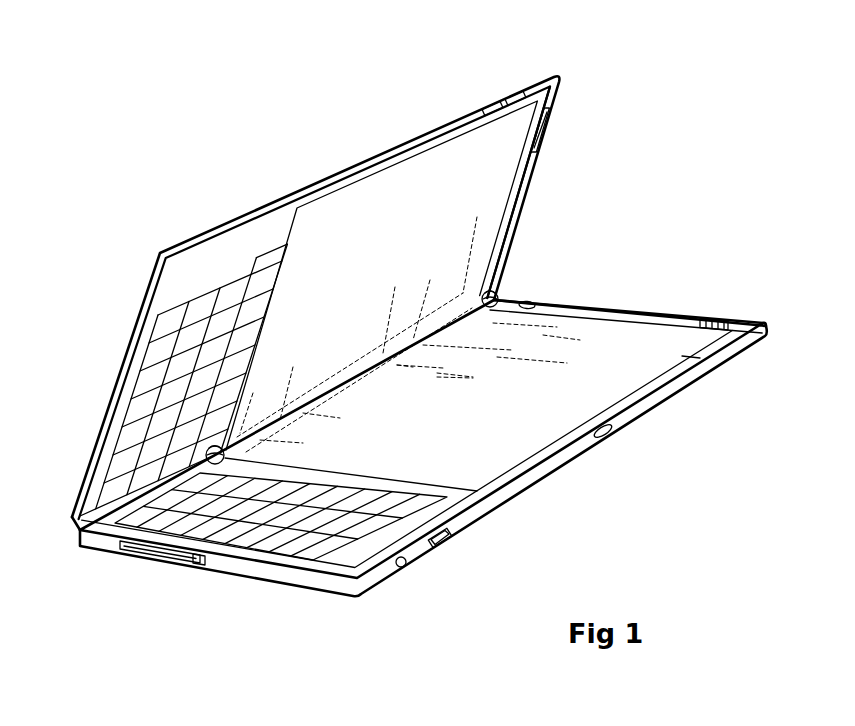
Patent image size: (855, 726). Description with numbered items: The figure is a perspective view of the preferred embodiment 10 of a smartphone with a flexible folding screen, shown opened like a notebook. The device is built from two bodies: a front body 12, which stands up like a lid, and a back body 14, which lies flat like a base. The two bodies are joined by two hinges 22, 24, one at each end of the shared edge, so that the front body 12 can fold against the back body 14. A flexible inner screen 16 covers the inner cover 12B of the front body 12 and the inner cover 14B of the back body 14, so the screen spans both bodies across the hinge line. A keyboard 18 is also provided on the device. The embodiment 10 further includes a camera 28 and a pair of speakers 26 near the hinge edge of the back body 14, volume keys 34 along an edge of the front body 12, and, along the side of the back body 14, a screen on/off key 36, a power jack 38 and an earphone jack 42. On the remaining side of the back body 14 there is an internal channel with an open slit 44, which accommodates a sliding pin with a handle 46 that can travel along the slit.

The preferred embodiment 10 is at (219, 167).
The front body 12 is at (304, 187).
The inner cover of the front body 12B is at (527, 186).
The back body 14 is at (668, 415).
The inner cover of the back body 14B is at (622, 313).
The flexible inner screen 16 is at (705, 362).
The keyboard 18 is at (157, 318).
The hinge 22 is at (503, 297).
The hinge 24 is at (206, 456).
The speakers 26 is at (712, 320).
The camera 28 is at (546, 306).
The volume keys 34 is at (488, 106).
The screen on/off key 36 is at (612, 440).
The power jack 38 is at (452, 548).
The earphone jack 42 is at (404, 570).
The open slit 44 is at (122, 553).
The sliding pin with a handle 46 is at (198, 568).